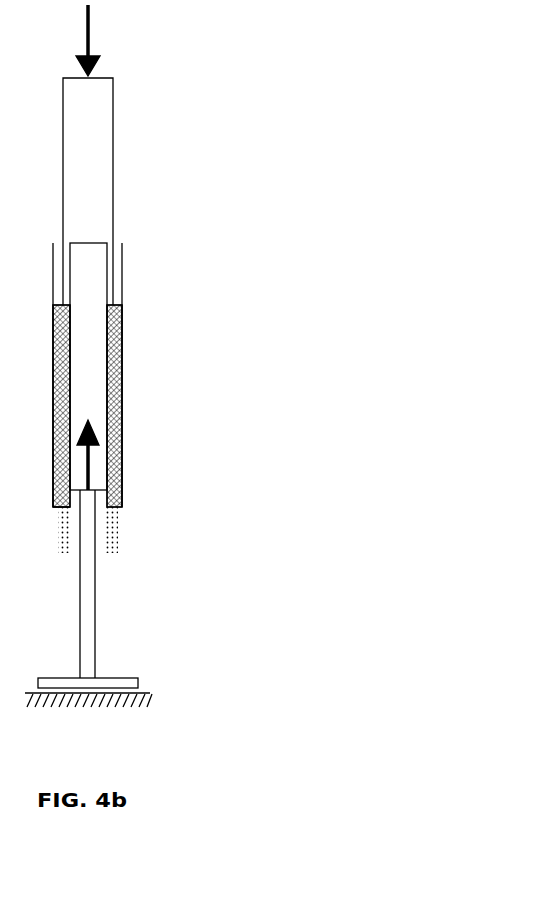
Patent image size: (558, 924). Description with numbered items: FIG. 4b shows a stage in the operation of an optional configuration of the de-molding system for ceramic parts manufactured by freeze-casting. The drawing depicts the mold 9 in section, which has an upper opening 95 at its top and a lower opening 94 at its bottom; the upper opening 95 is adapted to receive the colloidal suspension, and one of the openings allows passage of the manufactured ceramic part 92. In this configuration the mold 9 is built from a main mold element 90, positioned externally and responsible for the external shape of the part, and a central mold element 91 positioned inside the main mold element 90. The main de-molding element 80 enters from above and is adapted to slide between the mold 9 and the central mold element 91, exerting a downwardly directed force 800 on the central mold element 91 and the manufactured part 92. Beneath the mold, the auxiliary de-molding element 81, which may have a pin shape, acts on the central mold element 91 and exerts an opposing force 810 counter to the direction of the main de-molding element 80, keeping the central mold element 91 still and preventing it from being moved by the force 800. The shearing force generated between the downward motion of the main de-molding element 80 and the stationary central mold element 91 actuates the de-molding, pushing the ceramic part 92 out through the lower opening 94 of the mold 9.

The force 800 is at (96, 37).
The main de-molding element 80 is at (115, 173).
The upper opening 95 is at (55, 225).
The main mold element 90 is at (123, 428).
The central mold element 91 is at (93, 388).
The opposing force 810 is at (92, 467).
The manufactured ceramic part 92 is at (115, 535).
The lower opening 94 is at (56, 522).
The auxiliary de-molding element 81 is at (97, 596).
The mold 9 is at (160, 345).